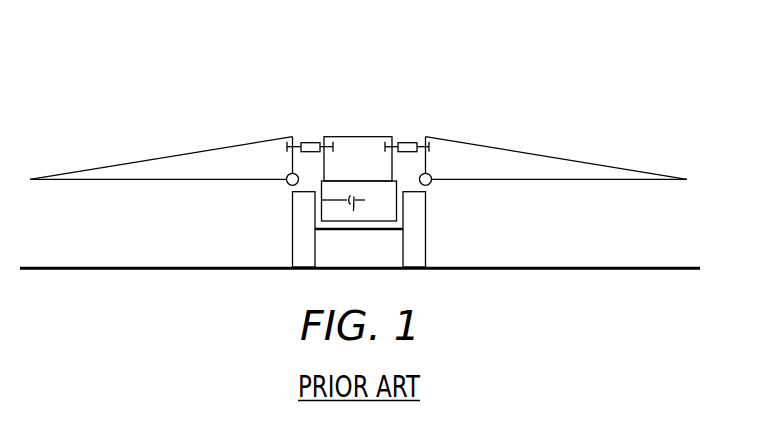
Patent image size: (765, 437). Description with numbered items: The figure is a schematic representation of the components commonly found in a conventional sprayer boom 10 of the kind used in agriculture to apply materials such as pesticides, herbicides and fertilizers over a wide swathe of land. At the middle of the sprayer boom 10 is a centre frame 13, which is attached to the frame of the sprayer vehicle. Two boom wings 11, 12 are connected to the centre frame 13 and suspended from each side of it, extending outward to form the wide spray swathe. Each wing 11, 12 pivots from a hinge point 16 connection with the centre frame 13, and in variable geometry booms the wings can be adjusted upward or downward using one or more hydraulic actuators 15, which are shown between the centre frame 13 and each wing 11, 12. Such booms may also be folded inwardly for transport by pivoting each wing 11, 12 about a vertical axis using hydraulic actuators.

The sprayer boom 10 is at (202, 85).
The boom wing 11 is at (165, 179).
The boom wing 12 is at (565, 179).
The centre frame 13 is at (362, 137).
The hydraulic actuator 15 is at (313, 141).
The hinge point 16 is at (287, 184).